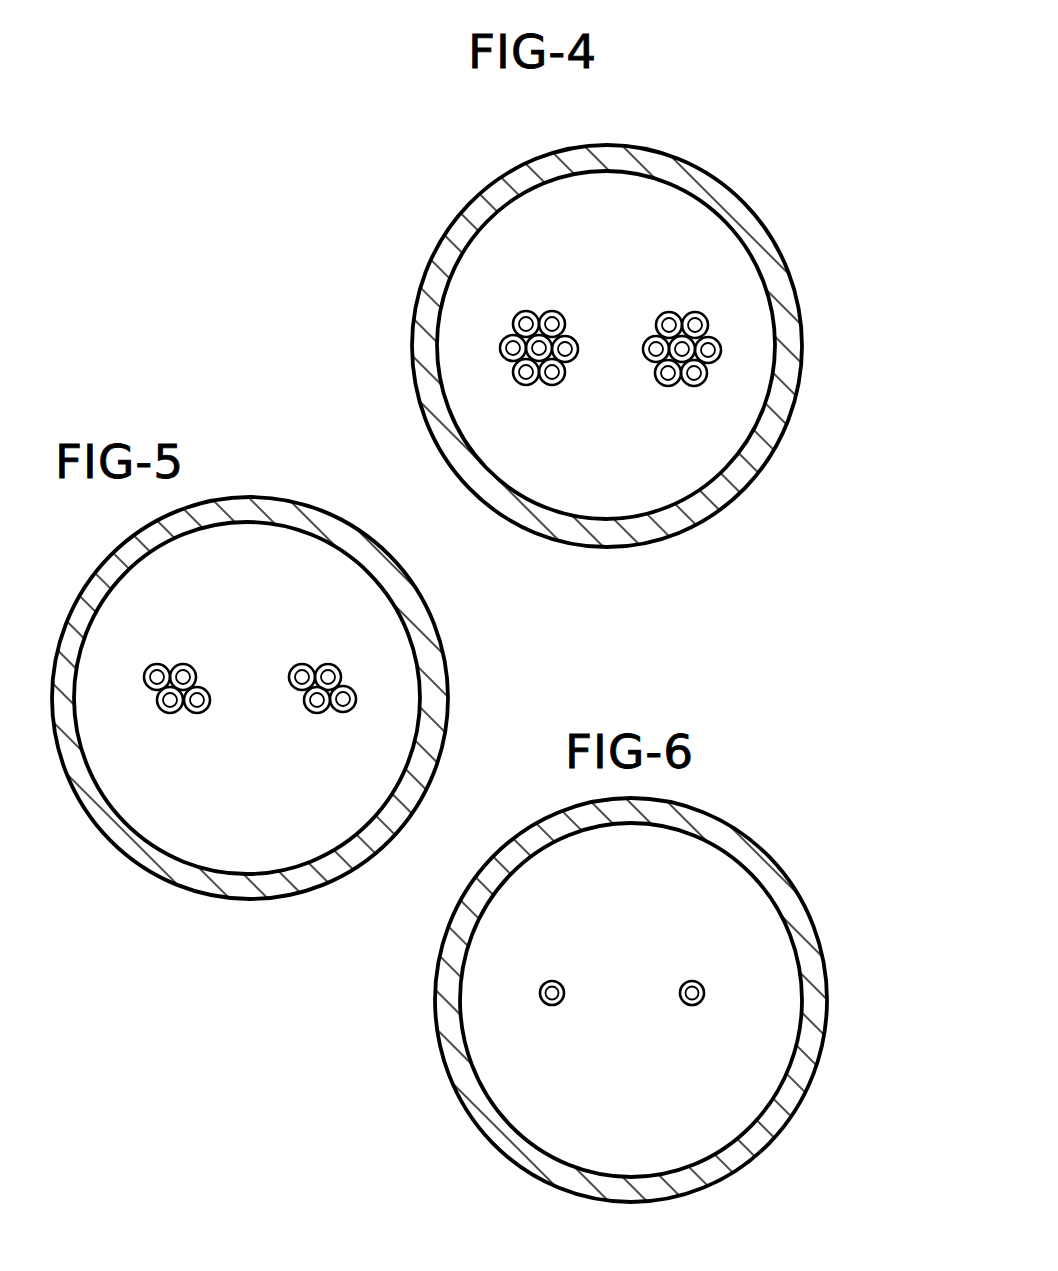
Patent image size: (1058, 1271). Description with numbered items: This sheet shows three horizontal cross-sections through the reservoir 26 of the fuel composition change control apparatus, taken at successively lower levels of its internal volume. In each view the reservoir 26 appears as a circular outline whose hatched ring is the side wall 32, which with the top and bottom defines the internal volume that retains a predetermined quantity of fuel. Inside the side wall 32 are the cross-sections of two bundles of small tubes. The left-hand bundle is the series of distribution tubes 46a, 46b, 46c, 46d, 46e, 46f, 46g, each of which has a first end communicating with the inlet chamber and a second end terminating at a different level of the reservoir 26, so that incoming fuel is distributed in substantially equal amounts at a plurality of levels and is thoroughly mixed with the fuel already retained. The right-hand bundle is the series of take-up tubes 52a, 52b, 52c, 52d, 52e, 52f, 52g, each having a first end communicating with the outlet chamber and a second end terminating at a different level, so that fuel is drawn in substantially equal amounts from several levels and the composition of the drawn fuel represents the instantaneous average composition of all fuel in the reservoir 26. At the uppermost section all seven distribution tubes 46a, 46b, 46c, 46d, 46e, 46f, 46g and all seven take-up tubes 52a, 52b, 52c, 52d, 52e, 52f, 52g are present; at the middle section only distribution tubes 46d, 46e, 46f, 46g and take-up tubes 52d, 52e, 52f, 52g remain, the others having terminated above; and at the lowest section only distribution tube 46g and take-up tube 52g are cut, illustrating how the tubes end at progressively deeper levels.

In FIG. 4, the reservoir 26 is at (772, 512).
In FIG. 5, the reservoir 26 is at (132, 884).
In FIG. 6, the reservoir 26 is at (480, 1162).
In FIG. 4, the side wall 32 is at (672, 146).
In FIG. 5, the side wall 32 is at (83, 587).
In FIG. 6, the side wall 32 is at (758, 857).
In FIG. 4, the distribution tube 46a is at (500, 348).
In FIG. 4, the distribution tube 46b is at (526, 386).
In FIG. 4, the distribution tube 46c is at (562, 379).
In FIG. 4, the distribution tube 46d is at (577, 343).
In FIG. 5, the distribution tube 46d is at (237, 690).
In FIG. 4, the distribution tube 46e is at (553, 312).
In FIG. 5, the distribution tube 46e is at (181, 666).
In FIG. 4, the distribution tube 46f is at (520, 336).
In FIG. 5, the distribution tube 46f is at (147, 669).
In FIG. 4, the distribution tube 46g is at (512, 356).
In FIG. 5, the distribution tube 46g is at (169, 714).
In FIG. 6, the distribution tube 46g is at (553, 981).
In FIG. 4, the take-up tube 52a is at (656, 362).
In FIG. 4, the take-up tube 52b is at (670, 386).
In FIG. 4, the take-up tube 52c is at (707, 380).
In FIG. 4, the take-up tube 52d is at (722, 351).
In FIG. 5, the take-up tube 52d is at (347, 711).
In FIG. 4, the take-up tube 52e is at (692, 318).
In FIG. 4, the take-up tube 52f is at (667, 318).
In FIG. 4, the take-up tube 52g is at (706, 333).
In FIG. 5, the take-up tube 52g is at (313, 712).
In FIG. 6, the take-up tube 52g is at (686, 1005).